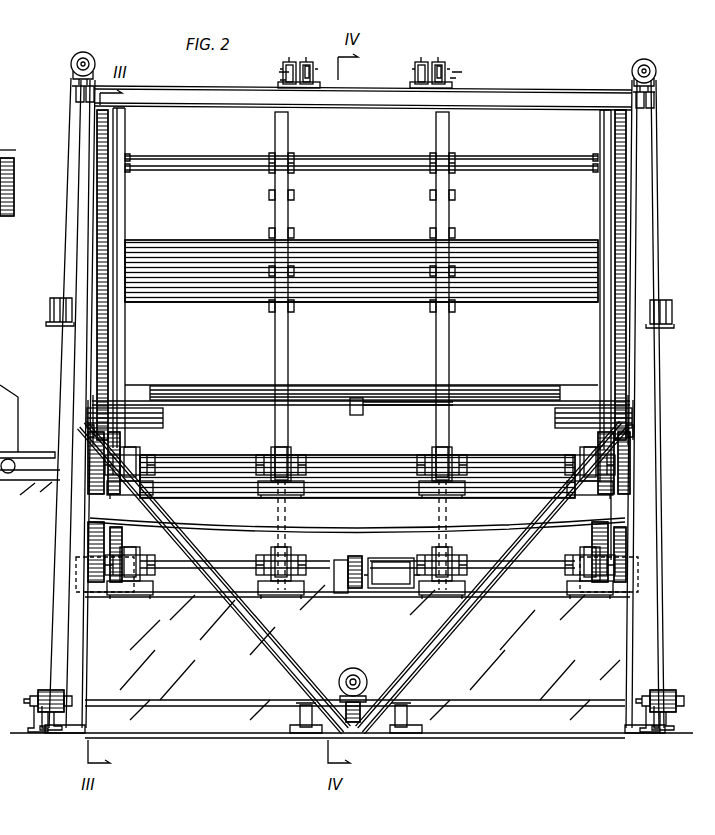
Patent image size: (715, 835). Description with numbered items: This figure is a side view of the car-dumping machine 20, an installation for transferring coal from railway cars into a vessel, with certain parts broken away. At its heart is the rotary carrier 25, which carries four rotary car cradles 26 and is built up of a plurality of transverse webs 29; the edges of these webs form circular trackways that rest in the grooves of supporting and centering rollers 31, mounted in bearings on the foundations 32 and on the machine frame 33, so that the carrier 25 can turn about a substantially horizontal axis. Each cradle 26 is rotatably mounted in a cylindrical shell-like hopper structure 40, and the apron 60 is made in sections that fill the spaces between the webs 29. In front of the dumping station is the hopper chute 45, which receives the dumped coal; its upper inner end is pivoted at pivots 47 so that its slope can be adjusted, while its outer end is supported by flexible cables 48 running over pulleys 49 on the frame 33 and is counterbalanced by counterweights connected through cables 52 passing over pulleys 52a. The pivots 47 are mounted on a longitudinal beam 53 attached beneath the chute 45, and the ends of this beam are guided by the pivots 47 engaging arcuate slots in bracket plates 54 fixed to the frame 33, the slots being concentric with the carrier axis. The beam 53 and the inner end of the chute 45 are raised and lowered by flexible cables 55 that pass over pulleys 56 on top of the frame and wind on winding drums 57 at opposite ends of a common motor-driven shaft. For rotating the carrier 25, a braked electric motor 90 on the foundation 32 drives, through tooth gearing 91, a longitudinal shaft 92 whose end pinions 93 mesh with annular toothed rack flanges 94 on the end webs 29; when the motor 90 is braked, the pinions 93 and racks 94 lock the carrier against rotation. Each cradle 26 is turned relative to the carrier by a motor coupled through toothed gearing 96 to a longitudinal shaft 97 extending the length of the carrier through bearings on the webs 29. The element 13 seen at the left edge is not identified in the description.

The adjacent apparatus 13 is at (10, 156).
The dumping machine 20 is at (664, 110).
The rotary carrier 25 is at (300, 144).
The rotary car cradle 26 is at (512, 502).
The transverse web 29 is at (273, 130).
The supporting and centering roller 31 is at (122, 463).
The foundation 32 is at (352, 666).
The machine frame 33 is at (80, 250).
The shell-like hopper structure 40 is at (207, 291).
The hopper chute 45 is at (142, 392).
The pivot 47 is at (90, 427).
The flexible cable 48 is at (292, 60).
The pulley 49 is at (308, 58).
The flexible cable 52 is at (288, 73).
The pulley 52a is at (280, 80).
The longitudinal beam 53 is at (151, 418).
The bracket plate 54 is at (90, 361).
The flexible cable 55 is at (56, 603).
The pulley 56 is at (84, 54).
The winding drum 57 is at (43, 690).
The apron 60 is at (361, 343).
The motor 90 is at (388, 595).
The tooth gearing 91 is at (358, 594).
The longitudinal shaft 92 is at (320, 567).
The toothed pinion 93 is at (90, 560).
The annular toothed rack flange 94 is at (110, 184).
The toothed gearing 96 is at (358, 414).
The longitudinal shaft 97 is at (400, 406).